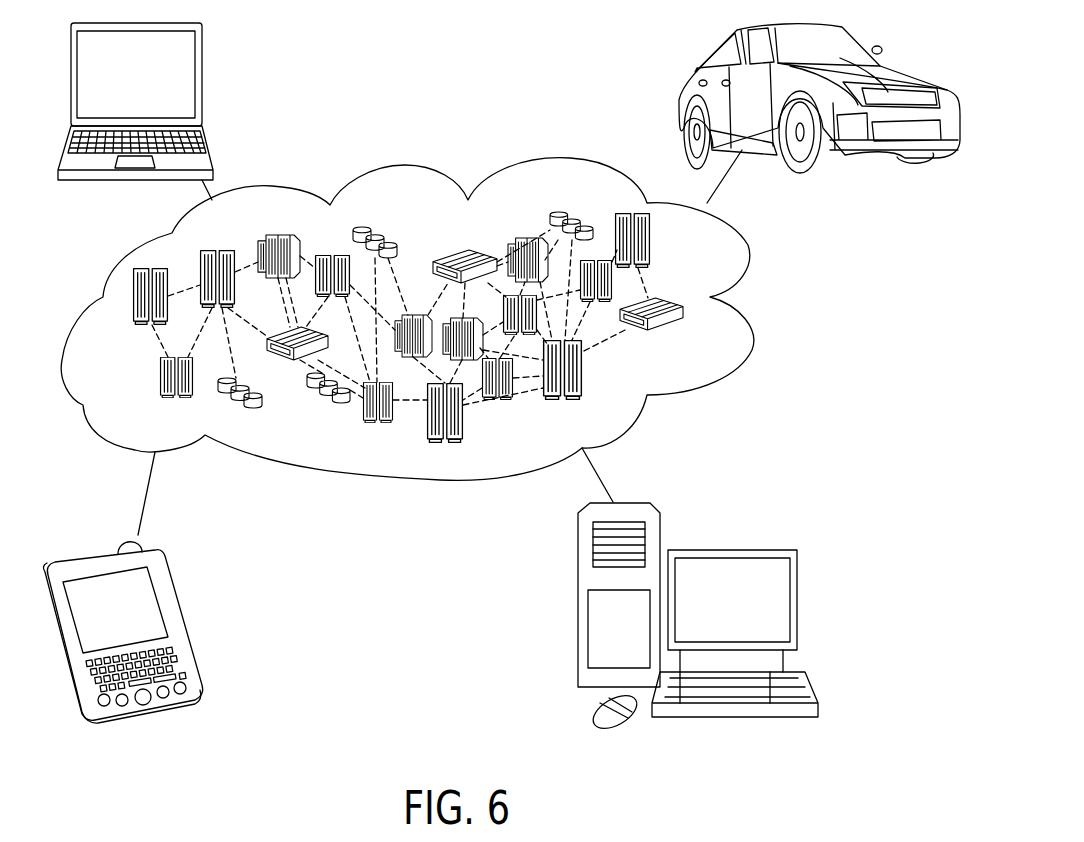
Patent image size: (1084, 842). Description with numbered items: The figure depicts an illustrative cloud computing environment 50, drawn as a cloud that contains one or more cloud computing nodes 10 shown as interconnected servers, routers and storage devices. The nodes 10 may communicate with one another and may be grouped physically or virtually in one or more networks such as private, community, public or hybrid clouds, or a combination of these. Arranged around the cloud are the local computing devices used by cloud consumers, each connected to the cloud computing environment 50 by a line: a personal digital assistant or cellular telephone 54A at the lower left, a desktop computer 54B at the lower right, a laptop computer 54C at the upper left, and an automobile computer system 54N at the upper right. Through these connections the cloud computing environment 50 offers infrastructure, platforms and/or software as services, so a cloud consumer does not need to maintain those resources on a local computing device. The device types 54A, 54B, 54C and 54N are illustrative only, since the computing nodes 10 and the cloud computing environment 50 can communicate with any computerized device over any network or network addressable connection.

The cloud computing node 10 is at (699, 348).
The cloud computing environment 50 is at (753, 250).
The personal digital assistant or cellular telephone 54A is at (170, 597).
The desktop computer 54B is at (797, 598).
The laptop computer 54C is at (202, 78).
The automobile computer system 54N is at (867, 43).